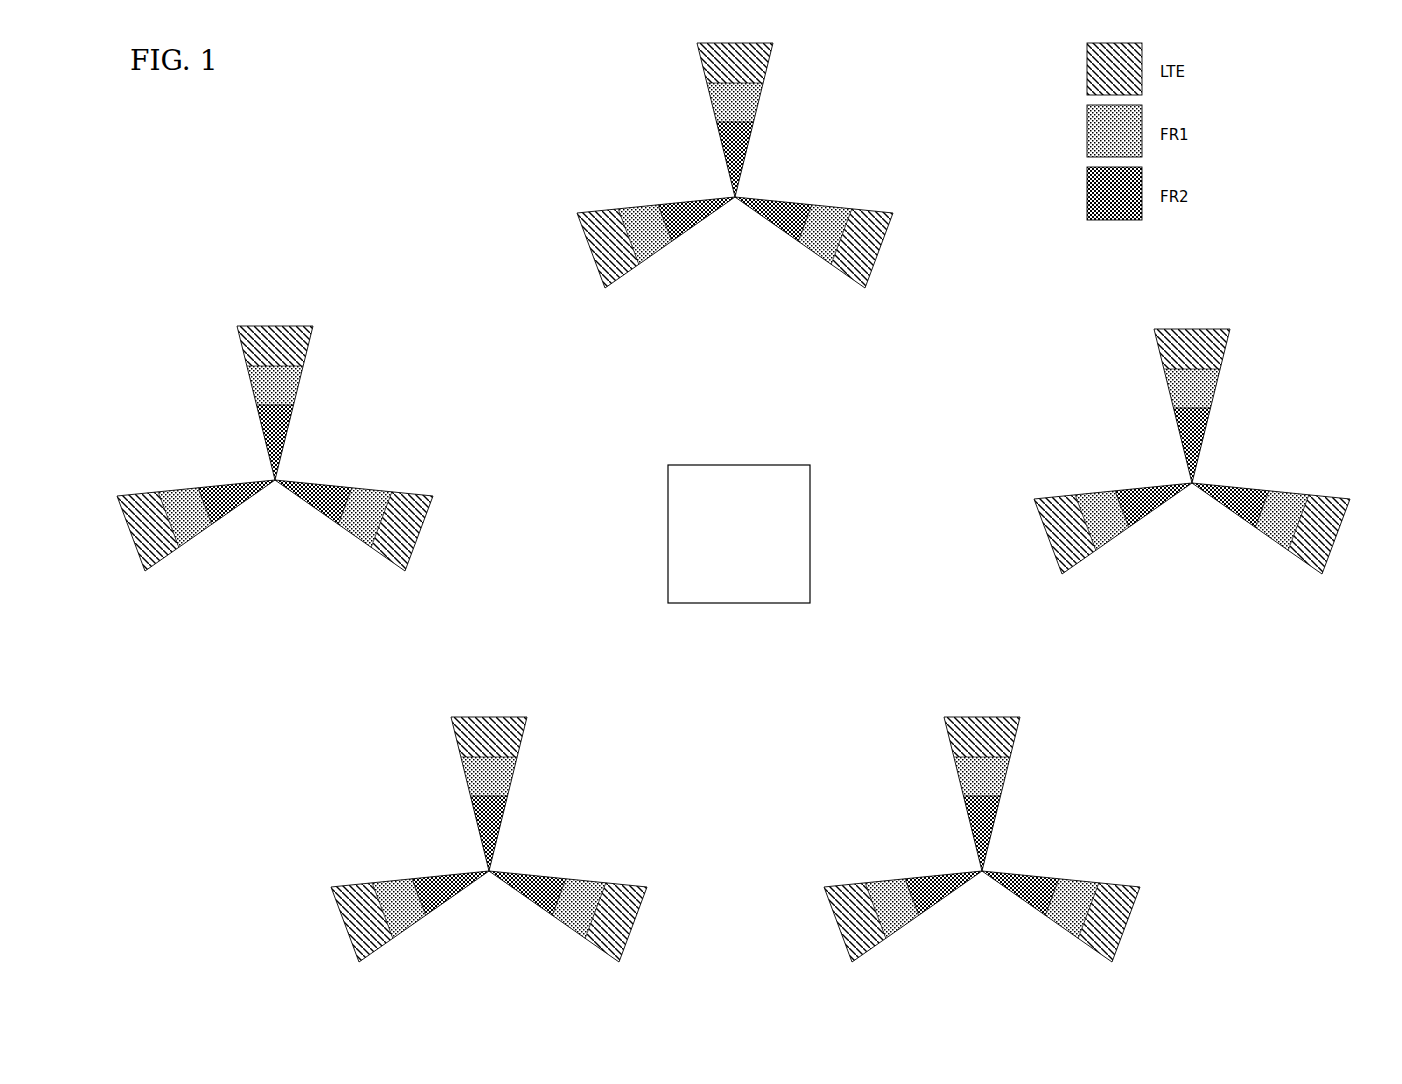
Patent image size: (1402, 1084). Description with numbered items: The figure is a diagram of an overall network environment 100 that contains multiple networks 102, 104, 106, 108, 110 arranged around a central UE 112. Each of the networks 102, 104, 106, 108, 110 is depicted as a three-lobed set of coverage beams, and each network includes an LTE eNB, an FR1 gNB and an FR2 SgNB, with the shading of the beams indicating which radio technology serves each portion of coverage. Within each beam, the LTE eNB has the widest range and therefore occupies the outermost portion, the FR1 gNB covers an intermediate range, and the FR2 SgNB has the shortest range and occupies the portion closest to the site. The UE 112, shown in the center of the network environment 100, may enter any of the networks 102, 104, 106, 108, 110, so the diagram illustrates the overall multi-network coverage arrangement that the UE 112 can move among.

The network environment 100 is at (405, 108).
The network 102 is at (880, 212).
The network 104 is at (1192, 328).
The network 106 is at (982, 716).
The network 108 is at (489, 716).
The network 110 is at (275, 325).
The UE 112 is at (714, 573).